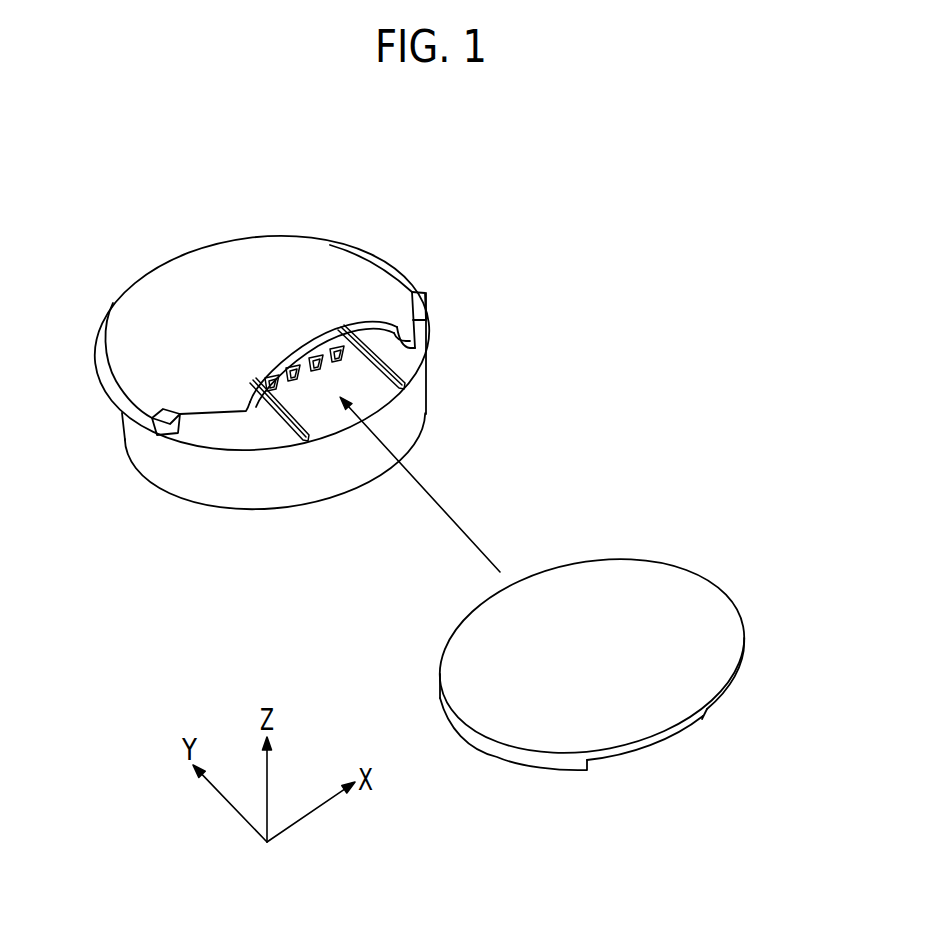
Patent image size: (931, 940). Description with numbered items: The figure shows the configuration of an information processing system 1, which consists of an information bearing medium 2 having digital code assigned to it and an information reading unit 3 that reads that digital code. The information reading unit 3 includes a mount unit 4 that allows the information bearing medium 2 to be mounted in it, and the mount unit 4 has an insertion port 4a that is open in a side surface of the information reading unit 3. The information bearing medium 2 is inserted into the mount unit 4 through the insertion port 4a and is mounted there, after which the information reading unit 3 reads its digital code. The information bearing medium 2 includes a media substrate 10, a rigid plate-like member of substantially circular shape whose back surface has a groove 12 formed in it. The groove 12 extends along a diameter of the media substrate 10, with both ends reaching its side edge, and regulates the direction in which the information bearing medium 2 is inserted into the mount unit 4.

The information processing system 1 is at (643, 240).
The information bearing medium 2 is at (697, 546).
The information reading unit 3 is at (170, 244).
The mount unit 4 is at (294, 400).
The insertion port 4a is at (403, 348).
The media substrate 10 is at (722, 692).
The groove 12 is at (703, 719).